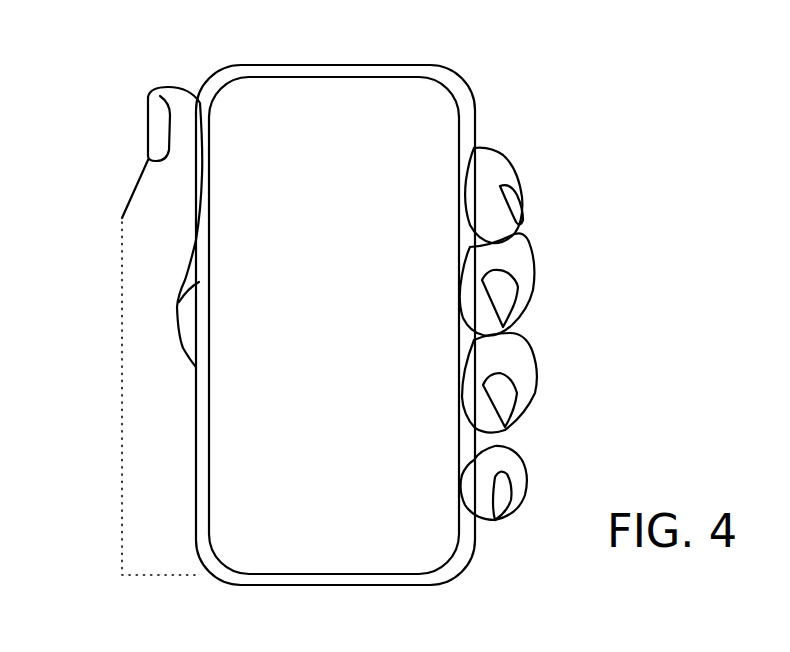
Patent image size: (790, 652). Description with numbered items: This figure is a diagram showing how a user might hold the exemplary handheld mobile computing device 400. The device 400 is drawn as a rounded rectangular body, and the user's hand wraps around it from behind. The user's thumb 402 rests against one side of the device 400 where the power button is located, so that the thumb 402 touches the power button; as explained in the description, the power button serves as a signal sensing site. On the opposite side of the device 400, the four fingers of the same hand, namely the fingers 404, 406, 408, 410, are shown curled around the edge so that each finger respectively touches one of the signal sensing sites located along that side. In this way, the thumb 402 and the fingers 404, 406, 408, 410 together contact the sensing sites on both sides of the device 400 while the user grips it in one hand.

The handheld mobile computing device 400 is at (390, 63).
The thumb 402 is at (143, 197).
The finger 404 is at (498, 167).
The finger 406 is at (527, 267).
The finger 408 is at (527, 360).
The finger 410 is at (517, 455).